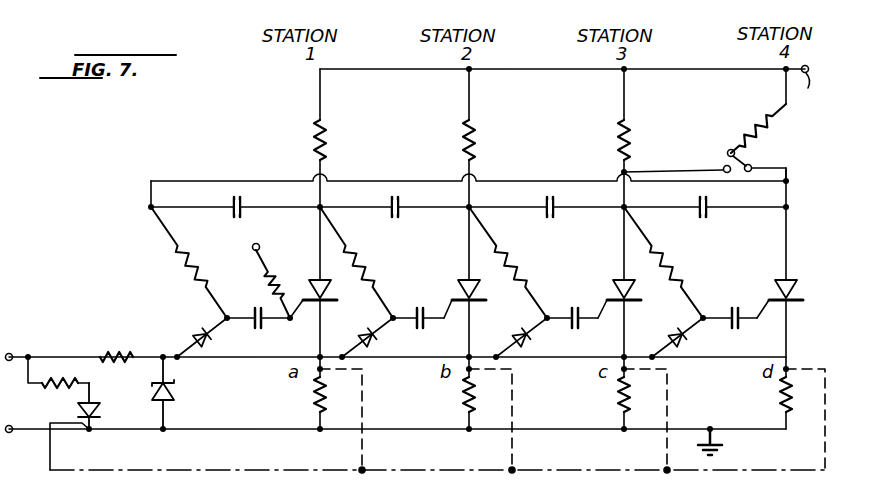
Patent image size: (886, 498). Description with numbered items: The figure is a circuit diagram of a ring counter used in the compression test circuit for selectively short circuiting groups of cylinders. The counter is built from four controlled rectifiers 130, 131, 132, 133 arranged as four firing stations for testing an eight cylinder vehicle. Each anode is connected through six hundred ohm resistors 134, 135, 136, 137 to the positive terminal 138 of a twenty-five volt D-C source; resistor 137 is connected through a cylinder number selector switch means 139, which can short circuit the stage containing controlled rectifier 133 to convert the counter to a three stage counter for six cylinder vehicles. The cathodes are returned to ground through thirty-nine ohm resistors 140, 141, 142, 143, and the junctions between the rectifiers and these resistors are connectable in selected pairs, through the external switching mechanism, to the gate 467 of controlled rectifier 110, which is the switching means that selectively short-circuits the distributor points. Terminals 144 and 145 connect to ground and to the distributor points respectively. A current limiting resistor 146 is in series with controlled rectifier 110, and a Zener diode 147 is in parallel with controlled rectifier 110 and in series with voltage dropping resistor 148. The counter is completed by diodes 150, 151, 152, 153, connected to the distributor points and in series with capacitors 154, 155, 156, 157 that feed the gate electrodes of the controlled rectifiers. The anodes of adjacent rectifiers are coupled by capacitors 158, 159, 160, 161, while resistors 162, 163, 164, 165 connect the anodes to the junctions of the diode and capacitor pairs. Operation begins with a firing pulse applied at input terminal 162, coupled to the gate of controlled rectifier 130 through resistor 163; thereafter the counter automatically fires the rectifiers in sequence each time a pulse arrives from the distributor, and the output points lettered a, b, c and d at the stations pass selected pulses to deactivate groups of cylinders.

The controlled rectifier 110 is at (100, 409).
The controlled rectifier 130 is at (335, 296).
The controlled rectifier 131 is at (457, 285).
The controlled rectifier 132 is at (612, 285).
The controlled rectifier 133 is at (774, 282).
The resistor 134 is at (329, 147).
The resistor 135 is at (478, 147).
The resistor 136 is at (633, 143).
The resistor 137 is at (760, 132).
The positive terminal 138 is at (810, 88).
The cylinder number selector switch means 139 is at (723, 167).
The resistor 140 is at (312, 396).
The resistor 141 is at (461, 396).
The resistor 142 is at (616, 394).
The resistor 143 is at (778, 392).
The terminal 144 is at (11, 435).
The terminal 145 is at (11, 352).
The current limiting resistor 146 is at (50, 375).
The Zener diode 147 is at (176, 395).
The voltage dropping resistor 148 is at (118, 350).
The diode 150 is at (192, 328).
The diode 151 is at (357, 332).
The diode 152 is at (512, 332).
The diode 153 is at (668, 332).
The capacitor 154 is at (259, 330).
The capacitor 155 is at (421, 330).
The capacitor 156 is at (576, 330).
The capacitor 157 is at (736, 330).
The capacitor 158 is at (397, 219).
The capacitor 159 is at (552, 219).
The capacitor 160 is at (705, 219).
The capacitor 161 is at (239, 219).
The resistor 162 is at (368, 268).
The resistor 163 is at (516, 262).
The resistor 164 is at (676, 272).
The resistor 165 is at (203, 275).
The gate 467 is at (60, 422).